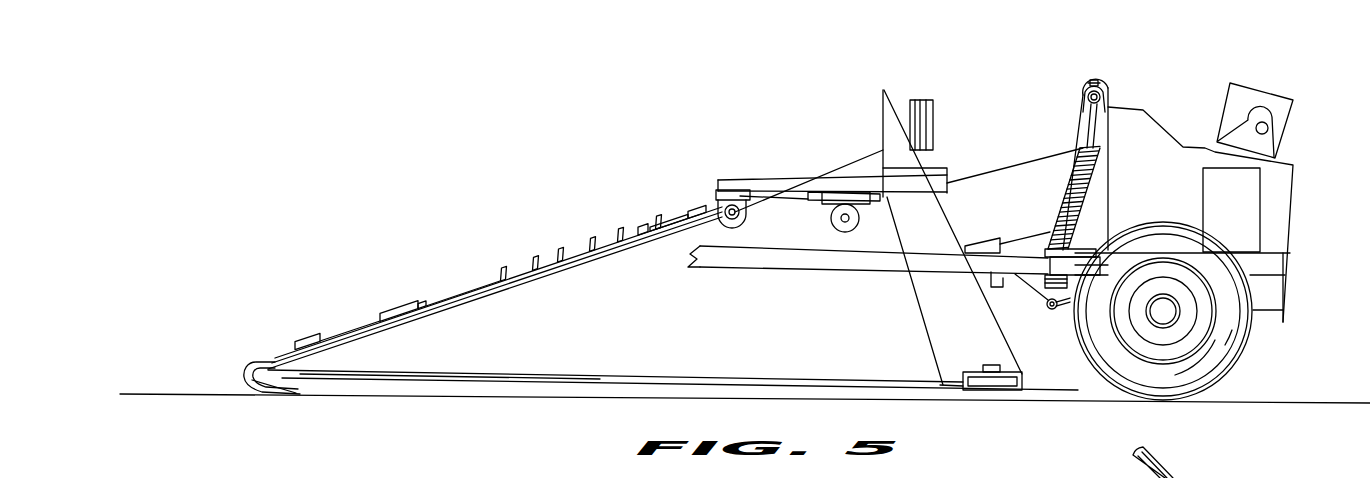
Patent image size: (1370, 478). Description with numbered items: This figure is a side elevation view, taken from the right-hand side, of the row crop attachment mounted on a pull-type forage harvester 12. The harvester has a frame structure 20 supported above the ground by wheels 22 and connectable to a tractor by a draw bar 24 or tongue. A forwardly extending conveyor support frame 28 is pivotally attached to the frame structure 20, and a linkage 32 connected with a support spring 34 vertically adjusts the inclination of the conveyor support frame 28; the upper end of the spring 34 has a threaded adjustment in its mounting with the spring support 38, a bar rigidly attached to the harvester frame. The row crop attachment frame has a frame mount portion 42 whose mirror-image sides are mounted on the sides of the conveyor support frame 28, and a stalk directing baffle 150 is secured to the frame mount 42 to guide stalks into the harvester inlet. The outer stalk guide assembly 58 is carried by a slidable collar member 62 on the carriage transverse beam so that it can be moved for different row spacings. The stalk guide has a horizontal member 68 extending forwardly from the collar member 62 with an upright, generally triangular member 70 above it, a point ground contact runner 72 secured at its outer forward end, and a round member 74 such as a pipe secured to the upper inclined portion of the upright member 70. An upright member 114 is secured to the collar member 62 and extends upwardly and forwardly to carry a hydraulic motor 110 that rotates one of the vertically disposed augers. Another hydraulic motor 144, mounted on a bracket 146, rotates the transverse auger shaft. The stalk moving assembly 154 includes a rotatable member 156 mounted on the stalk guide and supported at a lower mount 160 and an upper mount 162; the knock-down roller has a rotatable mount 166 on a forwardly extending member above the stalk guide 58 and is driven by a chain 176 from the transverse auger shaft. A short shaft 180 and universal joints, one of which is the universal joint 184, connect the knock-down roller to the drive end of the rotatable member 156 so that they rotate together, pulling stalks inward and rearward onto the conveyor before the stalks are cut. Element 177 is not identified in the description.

The forage harvester 12 is at (1278, 183).
The frame structure 20 is at (1303, 242).
The wheels 22 is at (1230, 350).
The draw bar 24 is at (858, 263).
The conveyor support frame 28 is at (1023, 245).
The linkage 32 is at (1065, 308).
The support spring 34 is at (1090, 188).
The spring support 38 is at (1103, 83).
The frame mount portion 42 is at (985, 283).
The outer stalk guide assembly 58 is at (420, 383).
The slidable collar member 62 is at (1022, 384).
The horizontal member 68 is at (927, 394).
The upright triangularly shaped member 70 is at (570, 350).
The point ground contact runner 72 is at (255, 361).
The round member 74 is at (320, 343).
The hydraulic motor 110 is at (910, 102).
The upright member 114 is at (933, 332).
The hydraulic motor 144 is at (837, 218).
The bracket 146 is at (853, 187).
The stalk directing baffle 150 is at (1042, 163).
The stalk moving assembly 154 is at (545, 228).
The rotatable member 156 is at (456, 283).
The mount 160 is at (390, 303).
The mount 162 is at (638, 230).
The rotatable mount 166 is at (730, 197).
The chain 176 is at (757, 193).
The brace 177 is at (790, 190).
The short shaft 180 is at (692, 214).
The universal joint 184 is at (660, 224).